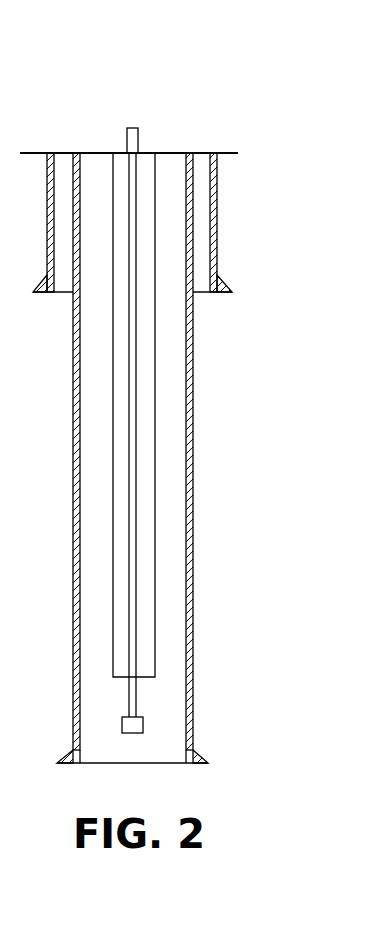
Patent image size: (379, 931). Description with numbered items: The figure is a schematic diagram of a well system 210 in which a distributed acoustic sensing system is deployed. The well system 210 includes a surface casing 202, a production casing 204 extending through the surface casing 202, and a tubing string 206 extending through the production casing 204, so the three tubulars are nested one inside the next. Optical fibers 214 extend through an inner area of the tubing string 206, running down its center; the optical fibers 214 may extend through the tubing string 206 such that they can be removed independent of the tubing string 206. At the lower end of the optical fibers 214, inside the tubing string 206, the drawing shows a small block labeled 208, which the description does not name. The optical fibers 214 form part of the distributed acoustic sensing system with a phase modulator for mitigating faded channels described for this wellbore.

The surface casing 202 is at (230, 224).
The production casing 204 is at (204, 349).
The tubing string 206 is at (164, 606).
The sensor block 208 is at (156, 727).
The well system 210 is at (202, 118).
The optical fibers 214 is at (148, 479).